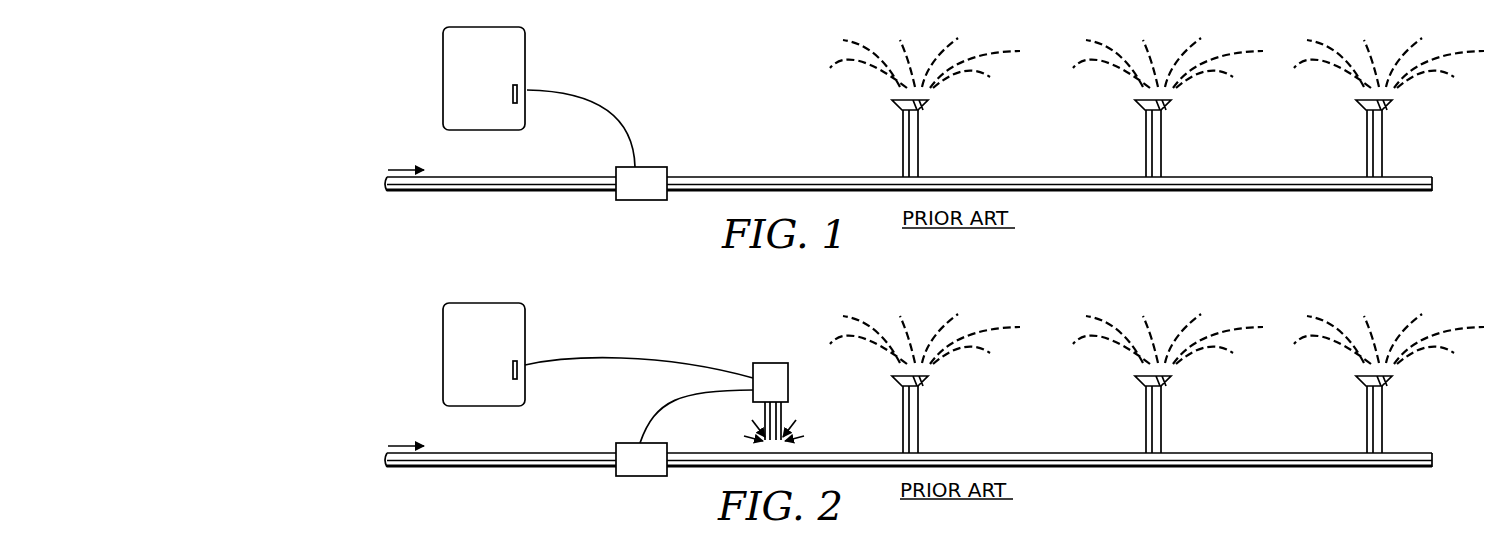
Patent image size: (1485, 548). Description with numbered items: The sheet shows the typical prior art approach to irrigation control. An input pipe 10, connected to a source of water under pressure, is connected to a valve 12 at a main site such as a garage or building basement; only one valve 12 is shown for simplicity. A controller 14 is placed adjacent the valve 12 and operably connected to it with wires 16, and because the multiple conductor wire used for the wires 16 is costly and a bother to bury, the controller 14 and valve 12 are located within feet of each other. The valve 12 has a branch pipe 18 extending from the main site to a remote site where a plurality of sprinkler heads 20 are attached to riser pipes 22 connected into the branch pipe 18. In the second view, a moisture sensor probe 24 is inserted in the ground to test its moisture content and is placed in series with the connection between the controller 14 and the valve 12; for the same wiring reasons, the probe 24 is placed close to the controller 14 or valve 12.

In FIG. 1, the input pipe 10 is at (527, 177).
In FIG. 2, the input pipe 10 is at (527, 453).
In FIG. 1, the valve 12 is at (658, 167).
In FIG. 2, the valve 12 is at (627, 443).
In FIG. 1, the controller 14 is at (526, 58).
In FIG. 2, the controller 14 is at (525, 335).
In FIG. 1, the wires 16 is at (610, 110).
In FIG. 2, the wires 16 is at (653, 358).
In FIG. 1, the branch pipe 18 is at (780, 177).
In FIG. 2, the branch pipe 18 is at (805, 453).
In FIG. 1, the sprinkler head 20 is at (923, 102).
In FIG. 2, the sprinkler head 20 is at (1157, 354).
In FIG. 1, the riser pipe 22 is at (919, 155).
In FIG. 2, the riser pipe 22 is at (1168, 419).
In FIG. 2, the moisture sensor probe 24 is at (788, 382).